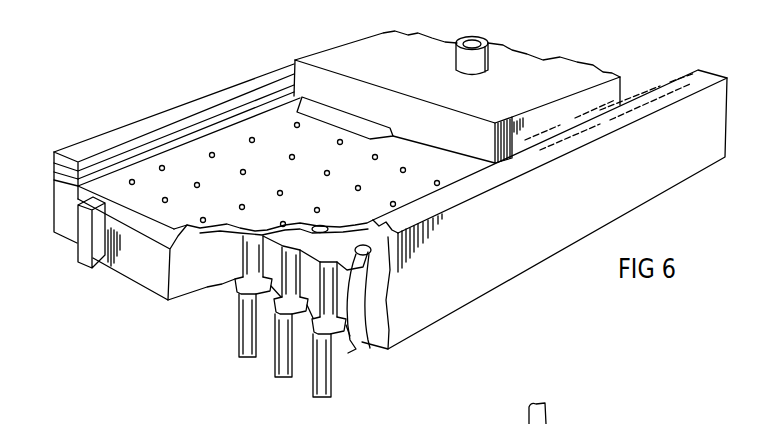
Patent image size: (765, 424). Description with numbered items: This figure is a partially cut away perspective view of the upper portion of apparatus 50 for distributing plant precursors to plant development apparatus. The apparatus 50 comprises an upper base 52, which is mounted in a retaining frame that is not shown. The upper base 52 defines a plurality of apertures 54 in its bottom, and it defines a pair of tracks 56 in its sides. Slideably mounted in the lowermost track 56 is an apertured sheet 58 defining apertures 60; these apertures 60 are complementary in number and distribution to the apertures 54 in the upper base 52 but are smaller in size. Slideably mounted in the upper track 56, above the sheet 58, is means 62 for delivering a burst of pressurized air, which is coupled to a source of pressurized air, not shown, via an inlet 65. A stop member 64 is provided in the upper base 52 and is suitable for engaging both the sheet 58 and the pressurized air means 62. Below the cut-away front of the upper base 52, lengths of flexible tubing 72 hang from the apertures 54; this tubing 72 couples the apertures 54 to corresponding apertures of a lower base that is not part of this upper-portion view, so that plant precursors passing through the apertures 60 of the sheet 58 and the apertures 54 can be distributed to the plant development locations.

The apparatus for distributing plant precursors 50 is at (657, 221).
The upper base 52 is at (497, 262).
The apertures 54 is at (365, 312).
The tracks 56 is at (48, 175).
The apertured sheet 58 is at (180, 170).
The apertures 60 is at (214, 156).
The means for delivering a burst of pressurized air 62 is at (355, 70).
The stop member 64 is at (83, 234).
The inlet 65 is at (473, 42).
The flexible tubing 72 is at (294, 360).